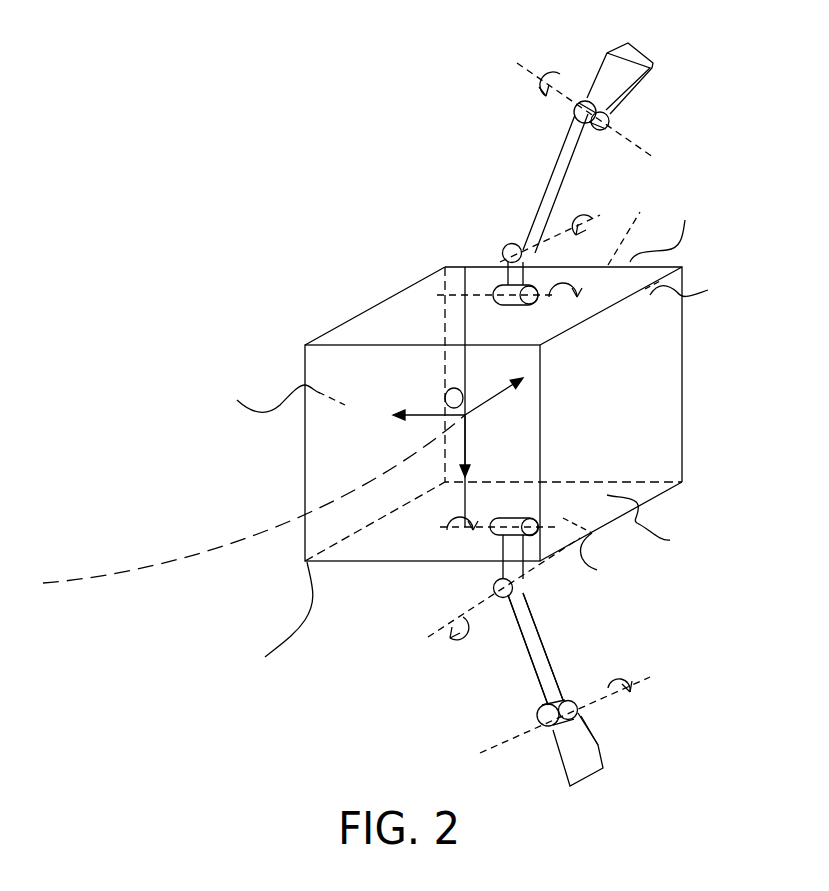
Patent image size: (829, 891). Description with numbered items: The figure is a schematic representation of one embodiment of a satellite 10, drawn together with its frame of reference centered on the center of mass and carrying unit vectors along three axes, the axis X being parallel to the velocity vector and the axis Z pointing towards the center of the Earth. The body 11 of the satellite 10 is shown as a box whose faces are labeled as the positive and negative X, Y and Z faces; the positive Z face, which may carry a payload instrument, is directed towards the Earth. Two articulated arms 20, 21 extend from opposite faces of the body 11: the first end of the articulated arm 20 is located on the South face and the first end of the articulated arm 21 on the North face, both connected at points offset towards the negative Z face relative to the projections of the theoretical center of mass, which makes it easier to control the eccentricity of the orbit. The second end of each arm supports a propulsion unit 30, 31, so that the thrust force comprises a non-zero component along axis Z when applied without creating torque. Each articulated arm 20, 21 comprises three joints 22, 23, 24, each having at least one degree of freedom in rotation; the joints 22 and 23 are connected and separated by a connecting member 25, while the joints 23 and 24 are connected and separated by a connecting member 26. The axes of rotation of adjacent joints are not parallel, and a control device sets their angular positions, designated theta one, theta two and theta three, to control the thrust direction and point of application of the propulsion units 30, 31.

The satellite 10 is at (288, 178).
The body 11 is at (348, 330).
The articulated arm 20 is at (522, 631).
The articulated arm 21 is at (541, 200).
The joint 22 is at (445, 268).
The joint 23 is at (508, 258).
The joint 24 is at (610, 119).
The connecting member 25 is at (543, 252).
The connecting member 26 is at (561, 156).
The propulsion unit 30 is at (605, 742).
The propulsion unit 31 is at (650, 70).